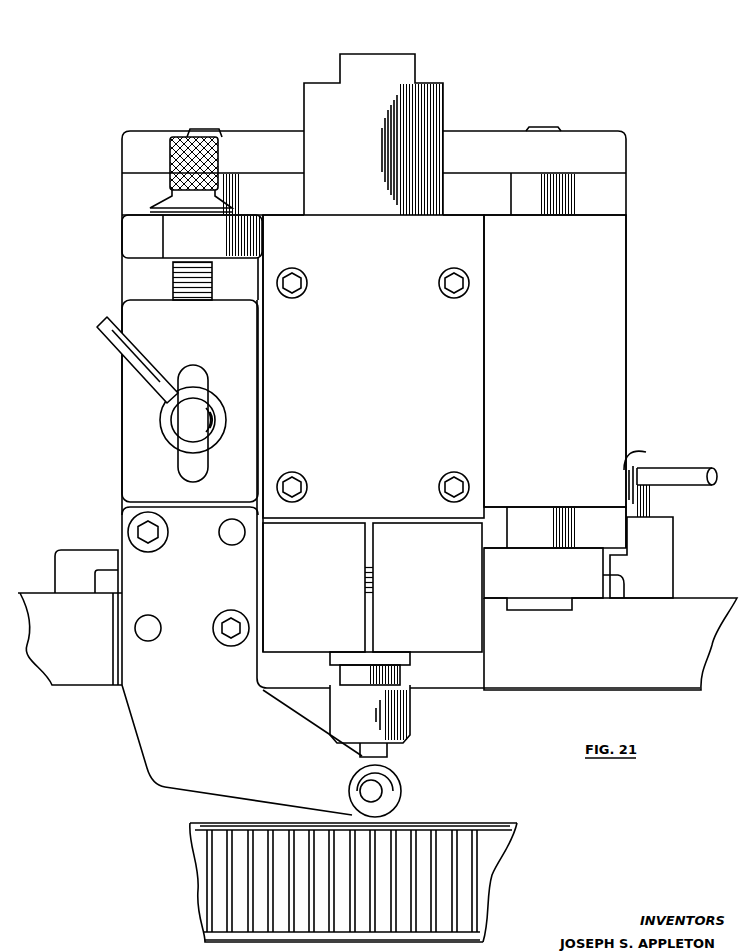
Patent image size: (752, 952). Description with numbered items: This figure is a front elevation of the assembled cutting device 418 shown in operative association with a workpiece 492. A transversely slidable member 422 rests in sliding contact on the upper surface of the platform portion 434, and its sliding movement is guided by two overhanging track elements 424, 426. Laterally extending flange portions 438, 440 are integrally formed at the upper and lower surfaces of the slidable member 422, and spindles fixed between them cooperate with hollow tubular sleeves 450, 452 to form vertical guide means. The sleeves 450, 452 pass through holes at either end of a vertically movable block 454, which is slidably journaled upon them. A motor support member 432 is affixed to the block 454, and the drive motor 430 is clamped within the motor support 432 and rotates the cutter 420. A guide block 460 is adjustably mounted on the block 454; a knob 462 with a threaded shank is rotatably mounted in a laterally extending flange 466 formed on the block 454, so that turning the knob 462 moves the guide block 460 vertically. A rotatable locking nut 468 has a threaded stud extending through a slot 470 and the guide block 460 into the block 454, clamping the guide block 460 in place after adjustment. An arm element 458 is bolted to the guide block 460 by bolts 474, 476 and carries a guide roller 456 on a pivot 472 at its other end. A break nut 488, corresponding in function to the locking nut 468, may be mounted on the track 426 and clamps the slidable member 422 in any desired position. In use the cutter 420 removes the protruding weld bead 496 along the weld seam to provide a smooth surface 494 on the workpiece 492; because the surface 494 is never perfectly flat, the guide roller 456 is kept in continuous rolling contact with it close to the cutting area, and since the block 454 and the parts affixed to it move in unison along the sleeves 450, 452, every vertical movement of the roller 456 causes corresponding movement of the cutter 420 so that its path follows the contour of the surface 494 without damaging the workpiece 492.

The finger assembly 418 is at (626, 355).
The cutter 420 is at (385, 757).
The transversely slidable member 422 is at (598, 523).
The overhanging track element 424 is at (90, 558).
The track 426 is at (657, 578).
The drive motor 430 is at (405, 62).
The motor support member 432 is at (373, 366).
The platform portion 434 is at (610, 644).
The laterally extending flange portion 438 is at (472, 145).
The laterally extending flange portion 440 is at (543, 573).
The hollow tubular sleeve 450 is at (229, 191).
The hollow tubular sleeve 452 is at (530, 188).
The vertically movable block 454 is at (603, 265).
The guide roller 456 is at (395, 796).
The arm element 458 is at (242, 661).
The guide block 460 is at (138, 452).
The knob 462 is at (207, 140).
The laterally extending flange 466 is at (138, 236).
The rotatable locking nut 468 is at (192, 405).
The slot 470 is at (196, 470).
The pivot 472 is at (362, 788).
The bolt 474 is at (150, 539).
The bolt 476 is at (225, 635).
The break nut 488 is at (640, 460).
The workpiece 492 is at (488, 870).
The smooth surface 494 is at (240, 822).
The weld bead 496 is at (475, 822).